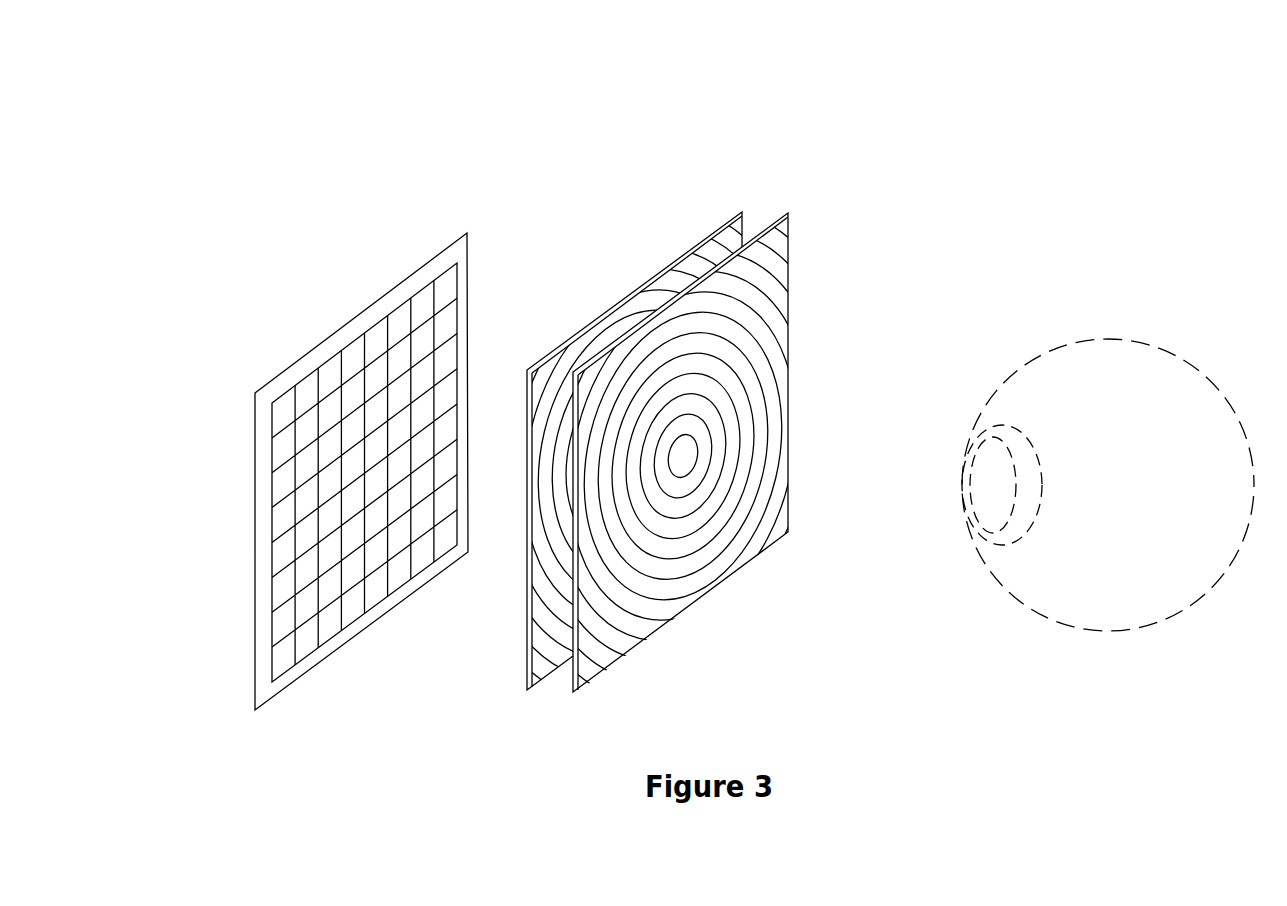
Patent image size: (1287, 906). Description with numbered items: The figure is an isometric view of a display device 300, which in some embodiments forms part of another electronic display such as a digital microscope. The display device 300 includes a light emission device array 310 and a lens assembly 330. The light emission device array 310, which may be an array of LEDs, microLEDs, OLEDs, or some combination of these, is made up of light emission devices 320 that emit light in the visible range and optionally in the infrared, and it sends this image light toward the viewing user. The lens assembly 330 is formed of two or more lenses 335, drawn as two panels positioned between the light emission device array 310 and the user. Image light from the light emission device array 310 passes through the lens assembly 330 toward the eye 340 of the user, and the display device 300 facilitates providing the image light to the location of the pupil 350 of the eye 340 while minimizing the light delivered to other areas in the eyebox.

The display device 300 is at (431, 133).
The light emission device array 310 is at (255, 525).
The light emission devices 320 is at (372, 322).
The lens assembly 330 is at (754, 186).
The lenses 335 is at (528, 598).
The eye 340 is at (1107, 338).
The pupil 350 is at (970, 503).